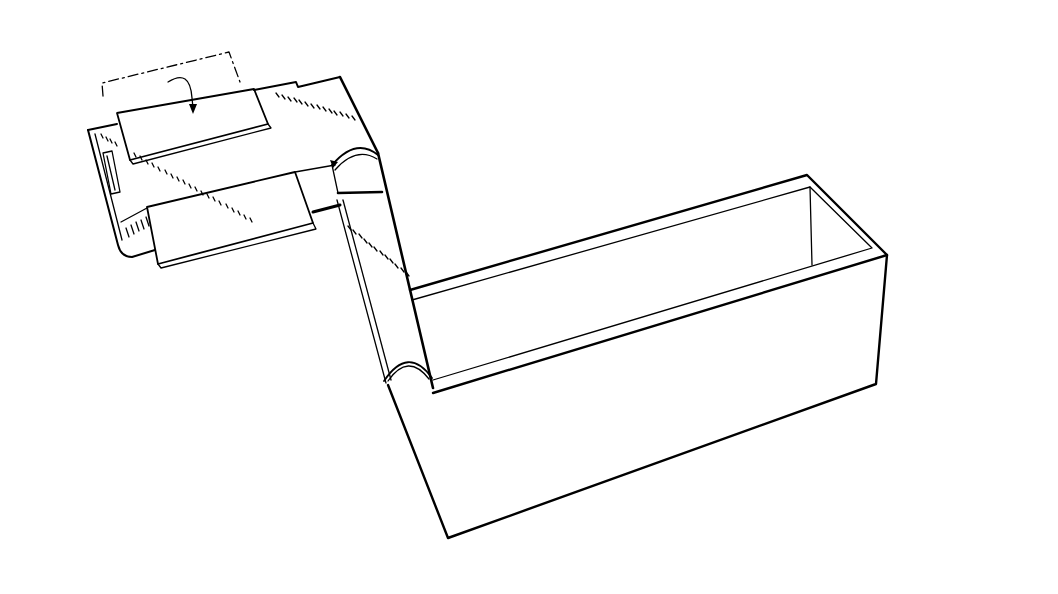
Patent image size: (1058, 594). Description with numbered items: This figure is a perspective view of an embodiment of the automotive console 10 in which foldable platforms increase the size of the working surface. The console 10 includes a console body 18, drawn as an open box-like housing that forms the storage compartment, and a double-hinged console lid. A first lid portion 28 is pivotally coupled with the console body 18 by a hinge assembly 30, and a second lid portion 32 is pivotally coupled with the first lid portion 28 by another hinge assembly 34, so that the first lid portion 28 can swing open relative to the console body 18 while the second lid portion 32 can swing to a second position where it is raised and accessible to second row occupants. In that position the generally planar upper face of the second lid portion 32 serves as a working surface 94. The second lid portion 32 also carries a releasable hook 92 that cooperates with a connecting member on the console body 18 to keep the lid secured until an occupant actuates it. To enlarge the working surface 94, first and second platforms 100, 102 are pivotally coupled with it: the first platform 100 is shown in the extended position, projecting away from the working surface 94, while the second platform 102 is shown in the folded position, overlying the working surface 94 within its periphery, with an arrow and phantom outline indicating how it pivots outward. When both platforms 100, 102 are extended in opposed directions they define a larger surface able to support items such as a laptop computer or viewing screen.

The automotive console 10 is at (853, 436).
The console body 18 is at (868, 322).
The first lid portion 28 is at (378, 228).
The hinge assembly 30 is at (398, 397).
The second lid portion 32 is at (277, 88).
The hinge assembly 34 is at (389, 165).
The releasable hook 92 is at (101, 174).
The working surface 94 is at (338, 94).
The first platform 100 is at (187, 266).
The second platform 102 is at (137, 122).